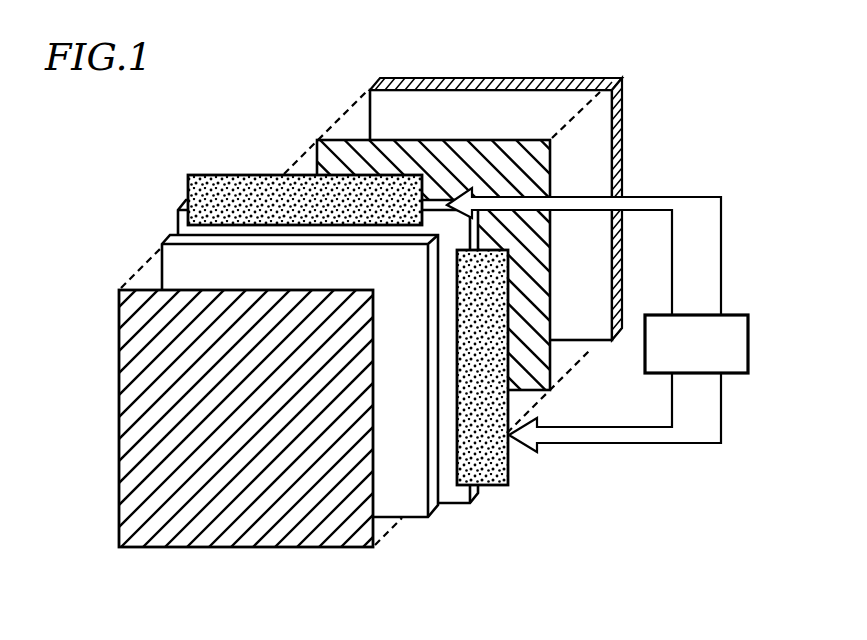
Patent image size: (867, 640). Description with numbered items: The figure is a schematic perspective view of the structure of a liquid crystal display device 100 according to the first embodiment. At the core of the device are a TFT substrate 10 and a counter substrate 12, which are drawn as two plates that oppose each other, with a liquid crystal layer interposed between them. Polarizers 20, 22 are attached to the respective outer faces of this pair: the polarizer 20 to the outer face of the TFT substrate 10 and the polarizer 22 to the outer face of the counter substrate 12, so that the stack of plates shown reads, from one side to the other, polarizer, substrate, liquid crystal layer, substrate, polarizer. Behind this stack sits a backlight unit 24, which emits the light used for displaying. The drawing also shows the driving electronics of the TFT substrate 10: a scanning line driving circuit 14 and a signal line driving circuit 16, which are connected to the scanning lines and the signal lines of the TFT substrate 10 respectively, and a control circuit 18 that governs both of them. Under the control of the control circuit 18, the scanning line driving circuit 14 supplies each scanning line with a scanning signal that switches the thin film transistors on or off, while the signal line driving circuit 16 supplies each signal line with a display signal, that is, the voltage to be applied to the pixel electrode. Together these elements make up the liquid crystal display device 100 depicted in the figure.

The liquid crystal display device 100 is at (405, 309).
The TFT substrate 10 is at (457, 498).
The counter substrate 12 is at (408, 510).
The scanning line driving circuit 14 is at (497, 468).
The signal line driving circuit 16 is at (228, 175).
The control circuit 18 is at (597, 320).
The polarizer 20 is at (542, 368).
The polarizer 22 is at (197, 538).
The backlight unit 24 is at (623, 118).